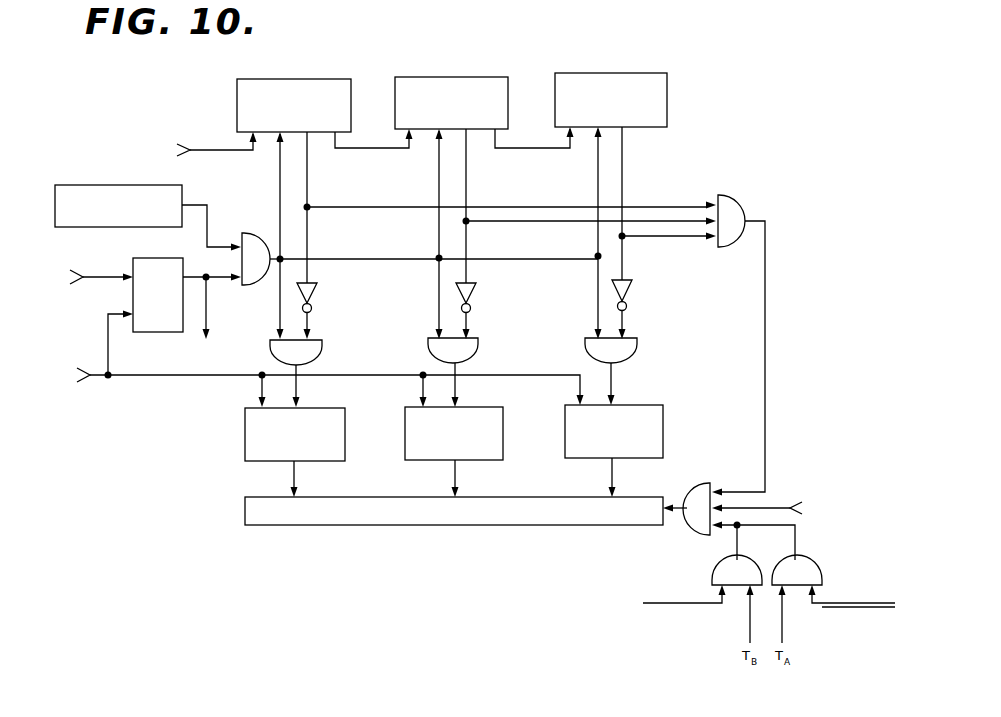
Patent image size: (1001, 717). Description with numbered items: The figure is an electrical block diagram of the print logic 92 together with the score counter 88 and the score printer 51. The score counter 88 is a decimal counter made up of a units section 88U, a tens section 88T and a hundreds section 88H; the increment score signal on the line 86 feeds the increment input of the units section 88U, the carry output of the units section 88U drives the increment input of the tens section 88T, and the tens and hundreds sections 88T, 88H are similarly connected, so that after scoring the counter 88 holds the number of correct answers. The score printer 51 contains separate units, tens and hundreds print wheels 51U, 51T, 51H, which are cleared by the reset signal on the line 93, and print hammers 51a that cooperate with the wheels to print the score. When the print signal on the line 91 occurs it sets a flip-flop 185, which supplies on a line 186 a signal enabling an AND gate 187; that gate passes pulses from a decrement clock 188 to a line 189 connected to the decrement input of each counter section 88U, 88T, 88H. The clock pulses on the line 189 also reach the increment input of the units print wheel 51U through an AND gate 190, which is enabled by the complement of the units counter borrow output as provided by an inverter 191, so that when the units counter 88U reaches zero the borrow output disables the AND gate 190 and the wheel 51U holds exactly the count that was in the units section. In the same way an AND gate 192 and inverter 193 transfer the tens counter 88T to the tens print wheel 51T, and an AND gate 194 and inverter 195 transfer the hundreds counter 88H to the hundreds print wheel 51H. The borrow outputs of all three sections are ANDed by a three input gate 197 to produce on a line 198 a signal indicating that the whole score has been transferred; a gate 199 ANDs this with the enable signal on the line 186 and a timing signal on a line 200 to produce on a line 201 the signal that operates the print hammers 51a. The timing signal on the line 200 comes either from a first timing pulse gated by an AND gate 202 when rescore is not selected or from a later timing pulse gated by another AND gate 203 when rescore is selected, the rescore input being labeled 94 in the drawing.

The score counter 88 is at (226, 74).
The units section 88U is at (318, 78).
The tens section 88T is at (473, 76).
The hundreds section 88H is at (657, 72).
The line 86 is at (221, 150).
The print logic 92 is at (728, 146).
The decrement clock 188 is at (182, 196).
The AND gate 187 is at (258, 235).
The flip-flop 185 is at (145, 258).
The line 91 is at (98, 280).
The line 186 is at (215, 280).
The line 189 is at (345, 258).
The inverter 191 is at (314, 301).
The inverter 193 is at (473, 301).
The inverter 195 is at (629, 301).
The three input gate 197 is at (746, 203).
The line 198 is at (765, 345).
The AND gate 190 is at (322, 350).
The AND gate 192 is at (478, 350).
The AND gate 194 is at (633, 355).
The line 93 is at (178, 376).
The score printer 51 is at (215, 449).
The units print wheel 51U is at (267, 462).
The tens print wheel 51T is at (425, 461).
The hundreds print wheel 51H is at (592, 459).
The print hammers 51a is at (365, 526).
The line 201 is at (680, 515).
The gate 199 is at (698, 482).
The line 200 is at (797, 546).
The AND gate 202 is at (824, 576).
The AND gate 203 is at (712, 580).
The rescore line 94 is at (660, 603).